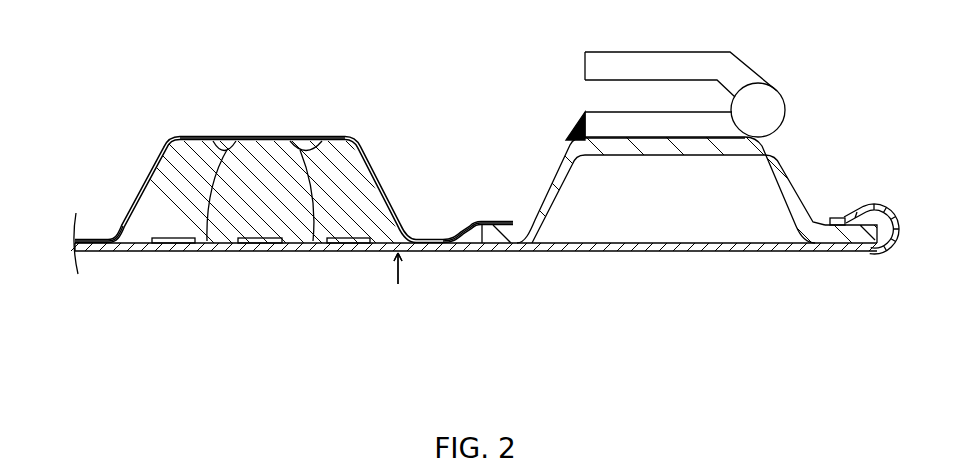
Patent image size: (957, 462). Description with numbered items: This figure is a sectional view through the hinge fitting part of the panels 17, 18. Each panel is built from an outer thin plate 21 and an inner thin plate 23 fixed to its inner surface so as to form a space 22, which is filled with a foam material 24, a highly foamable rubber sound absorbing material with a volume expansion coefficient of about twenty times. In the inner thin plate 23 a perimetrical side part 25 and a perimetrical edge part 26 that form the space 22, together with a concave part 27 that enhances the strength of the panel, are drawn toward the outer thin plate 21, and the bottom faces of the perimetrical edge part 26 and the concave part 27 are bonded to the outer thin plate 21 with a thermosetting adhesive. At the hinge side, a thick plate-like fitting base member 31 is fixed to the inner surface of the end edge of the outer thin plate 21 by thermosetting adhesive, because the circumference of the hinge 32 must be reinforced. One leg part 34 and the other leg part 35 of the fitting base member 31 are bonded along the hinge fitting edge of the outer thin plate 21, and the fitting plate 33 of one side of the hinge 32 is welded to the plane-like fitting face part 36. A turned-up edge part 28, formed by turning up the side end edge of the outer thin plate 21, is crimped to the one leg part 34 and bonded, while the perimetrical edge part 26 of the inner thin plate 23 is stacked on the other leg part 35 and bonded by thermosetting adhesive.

The panel 17 is at (409, 281).
The panel 18 is at (398, 268).
The outer thin plate 21 is at (443, 249).
The space 22 is at (306, 144).
The inner thin plate 23 is at (297, 137).
The foam material 24 is at (357, 161).
The perimetrical side part 25 is at (385, 180).
The perimetrical edge part 26 is at (492, 223).
The concave part 27 is at (116, 240).
The turned-up edge part 28 is at (837, 219).
The fitting base member 31 is at (782, 161).
The hinge 32 is at (768, 84).
The fitting plate 33 is at (600, 113).
The one leg part 34 is at (860, 240).
The other leg part 35 is at (472, 226).
The fitting face part 36 is at (650, 146).